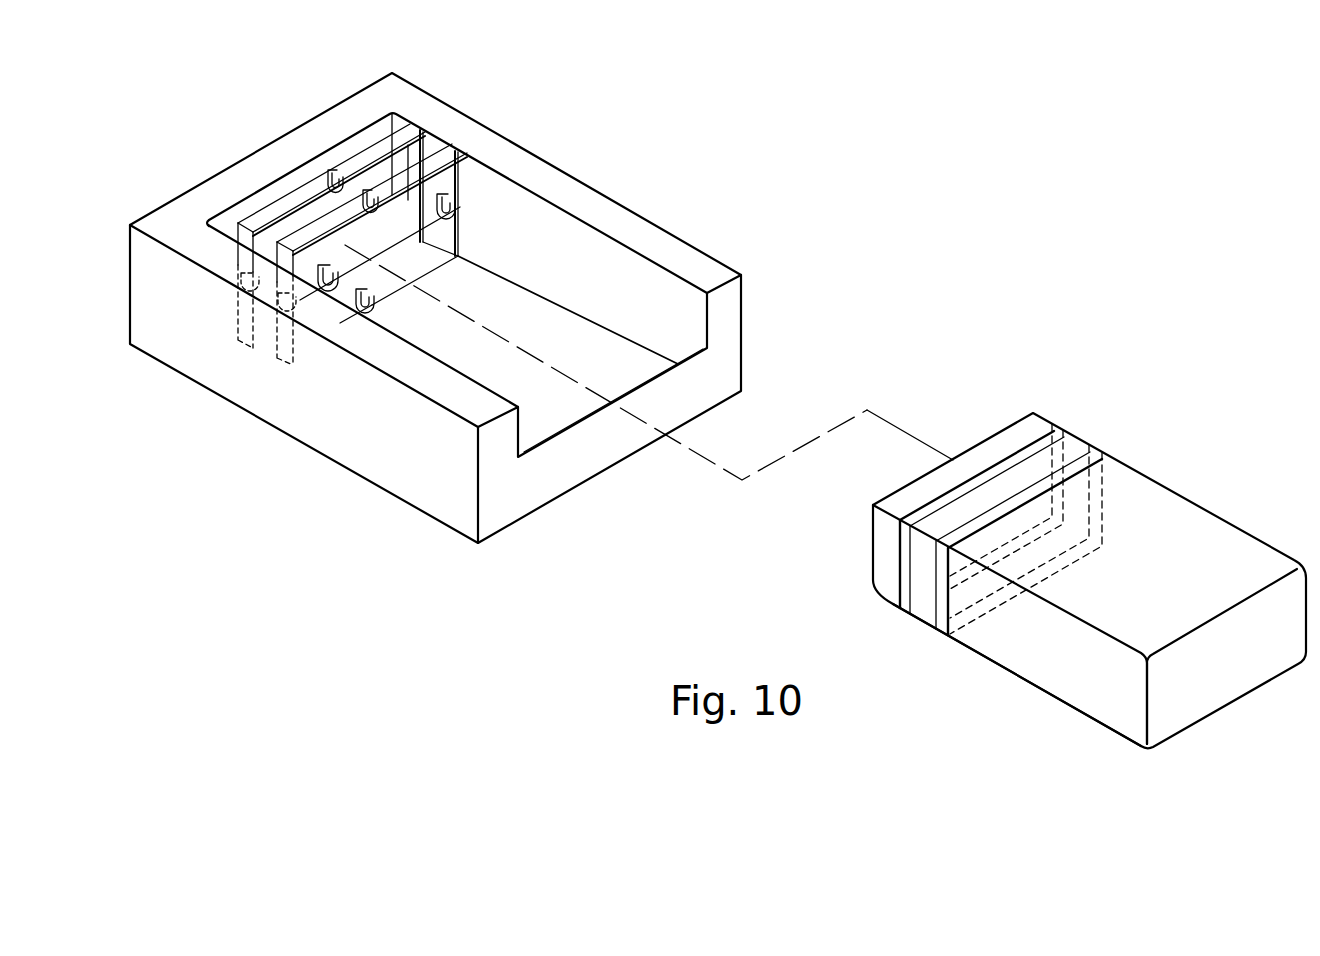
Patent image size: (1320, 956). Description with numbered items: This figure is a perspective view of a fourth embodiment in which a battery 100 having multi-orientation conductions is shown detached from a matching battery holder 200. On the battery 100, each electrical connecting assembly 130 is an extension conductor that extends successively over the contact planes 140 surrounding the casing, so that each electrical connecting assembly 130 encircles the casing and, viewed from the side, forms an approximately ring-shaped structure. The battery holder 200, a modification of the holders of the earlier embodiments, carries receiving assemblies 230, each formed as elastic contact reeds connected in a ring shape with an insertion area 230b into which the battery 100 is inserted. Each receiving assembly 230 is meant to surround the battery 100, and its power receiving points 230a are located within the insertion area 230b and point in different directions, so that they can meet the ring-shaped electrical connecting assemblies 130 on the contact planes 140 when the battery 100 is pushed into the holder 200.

The battery holder 200 is at (150, 203).
The receiving assembly 230 is at (372, 133).
The power receiving point 230a is at (370, 195).
The insertion area 230b is at (422, 276).
The battery 100 is at (1222, 486).
The electrical connecting assembly 130 is at (1023, 448).
The contact plane 140 is at (1253, 545).